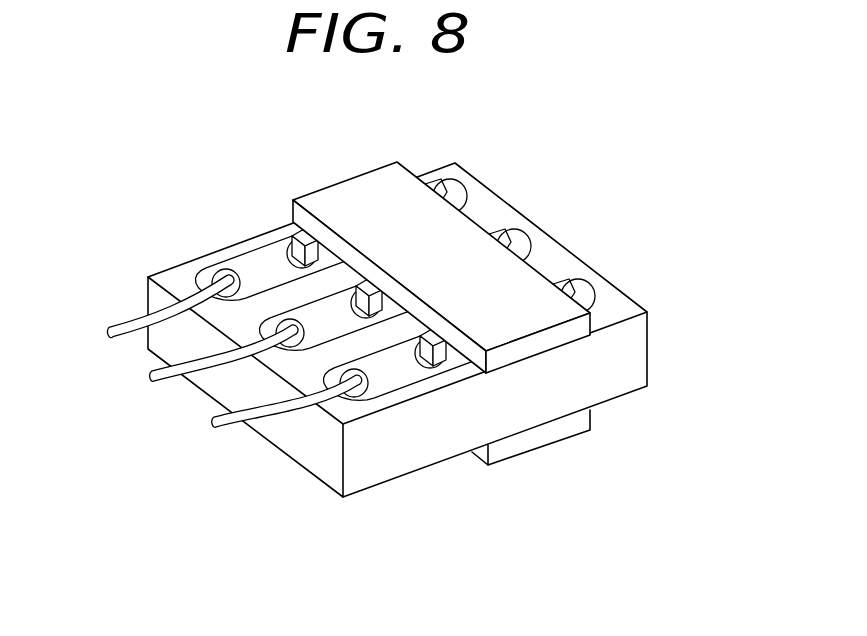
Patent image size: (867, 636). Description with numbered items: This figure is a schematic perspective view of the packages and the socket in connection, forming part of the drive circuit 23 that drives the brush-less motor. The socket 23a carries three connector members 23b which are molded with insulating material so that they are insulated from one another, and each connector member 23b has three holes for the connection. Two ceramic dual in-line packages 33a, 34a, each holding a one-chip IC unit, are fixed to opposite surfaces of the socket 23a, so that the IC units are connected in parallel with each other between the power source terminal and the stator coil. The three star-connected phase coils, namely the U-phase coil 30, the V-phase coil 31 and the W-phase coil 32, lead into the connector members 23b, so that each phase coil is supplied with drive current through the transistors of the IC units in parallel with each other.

The drive circuit 23 is at (380, 328).
The socket 23a is at (390, 458).
The connector members 23b is at (313, 313).
The U-phase coil 30 is at (135, 317).
The V-phase coil 31 is at (167, 373).
The W-phase coil 32 is at (225, 428).
The ceramic dual in-line package 33a is at (356, 192).
The ceramic dual in-line package 34a is at (565, 432).